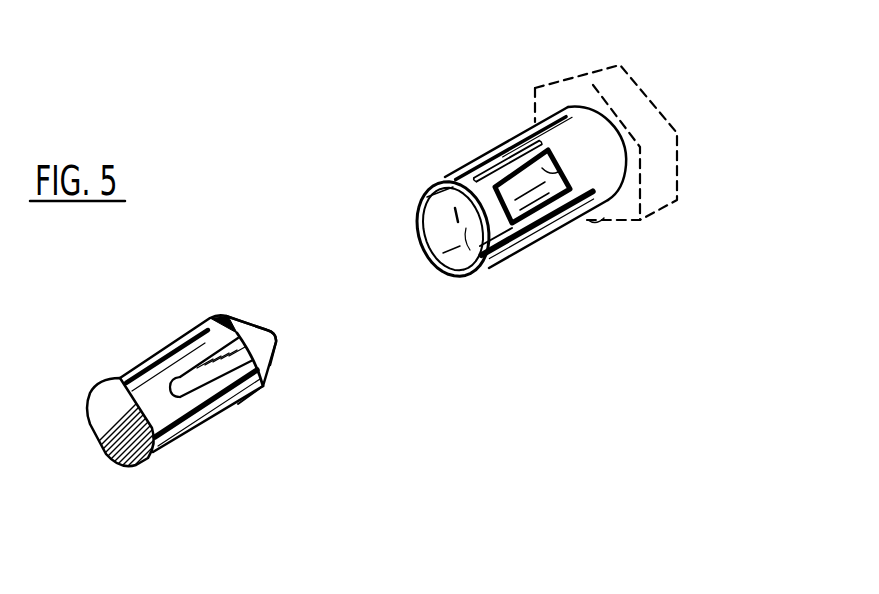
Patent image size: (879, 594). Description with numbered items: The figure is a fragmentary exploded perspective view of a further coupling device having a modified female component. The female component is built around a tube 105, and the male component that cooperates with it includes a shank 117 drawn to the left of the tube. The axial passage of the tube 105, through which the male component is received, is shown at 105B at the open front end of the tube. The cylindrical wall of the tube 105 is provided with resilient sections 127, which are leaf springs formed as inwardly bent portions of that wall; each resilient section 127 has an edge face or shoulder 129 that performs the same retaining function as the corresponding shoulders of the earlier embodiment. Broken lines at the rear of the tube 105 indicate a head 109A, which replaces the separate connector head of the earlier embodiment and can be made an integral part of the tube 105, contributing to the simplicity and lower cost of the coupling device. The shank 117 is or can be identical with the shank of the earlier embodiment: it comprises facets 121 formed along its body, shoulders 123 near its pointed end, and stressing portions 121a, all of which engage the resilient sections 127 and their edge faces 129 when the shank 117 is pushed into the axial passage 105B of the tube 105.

The tube 105 is at (592, 204).
The axial passage 105B is at (460, 250).
The head 109A is at (645, 98).
The shank 117 is at (124, 354).
The facet 121 is at (201, 388).
The stressing portion 121a is at (238, 403).
The shoulder 123 is at (240, 320).
The resilient section 127 is at (527, 193).
The edge face 129 is at (527, 167).